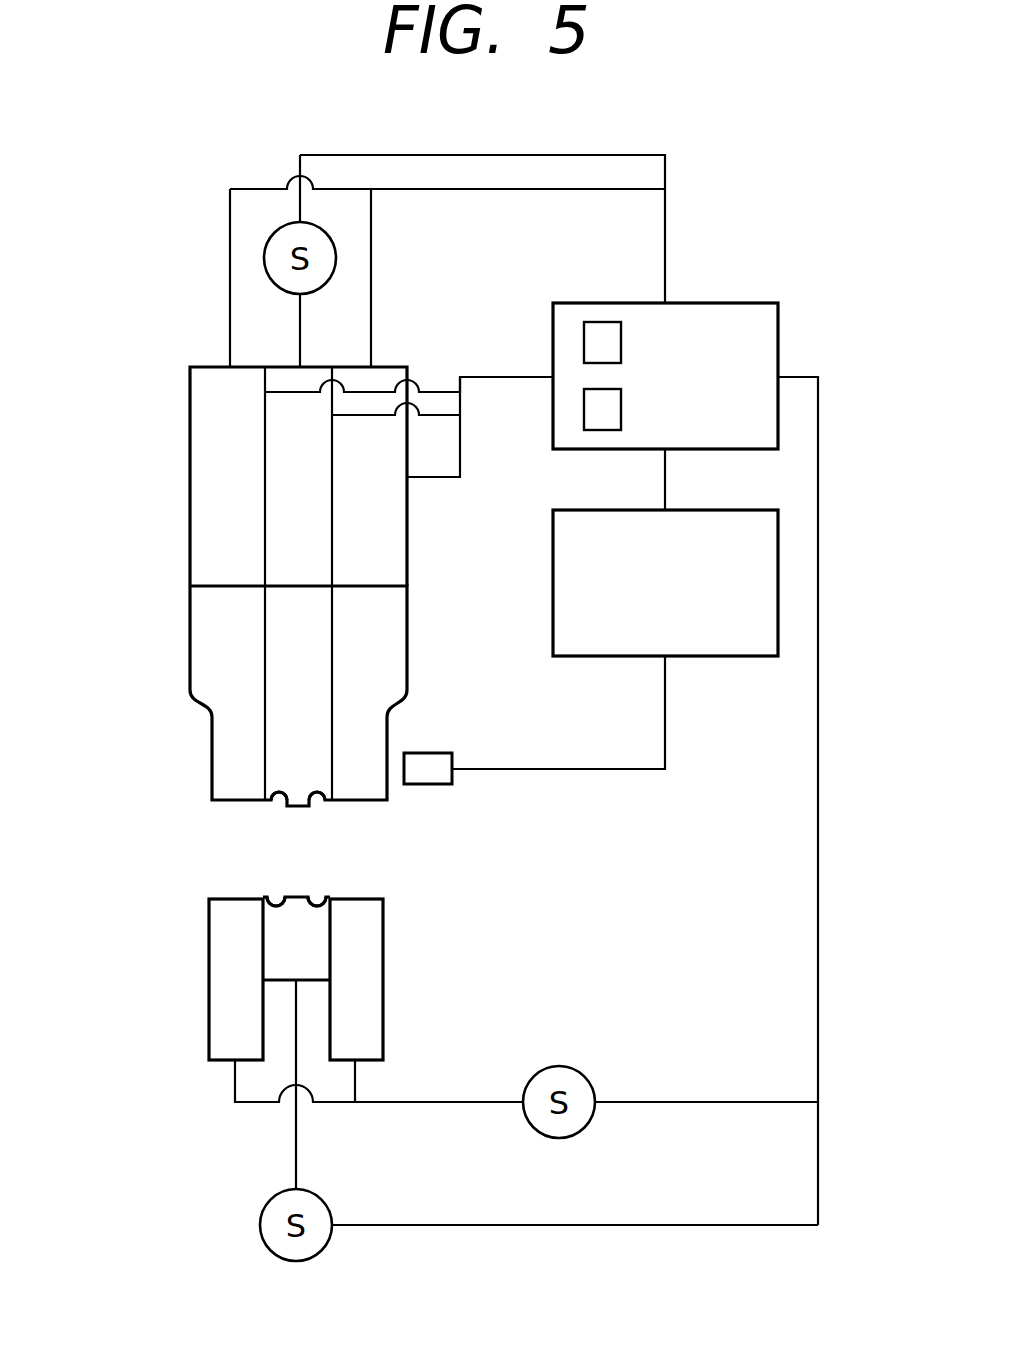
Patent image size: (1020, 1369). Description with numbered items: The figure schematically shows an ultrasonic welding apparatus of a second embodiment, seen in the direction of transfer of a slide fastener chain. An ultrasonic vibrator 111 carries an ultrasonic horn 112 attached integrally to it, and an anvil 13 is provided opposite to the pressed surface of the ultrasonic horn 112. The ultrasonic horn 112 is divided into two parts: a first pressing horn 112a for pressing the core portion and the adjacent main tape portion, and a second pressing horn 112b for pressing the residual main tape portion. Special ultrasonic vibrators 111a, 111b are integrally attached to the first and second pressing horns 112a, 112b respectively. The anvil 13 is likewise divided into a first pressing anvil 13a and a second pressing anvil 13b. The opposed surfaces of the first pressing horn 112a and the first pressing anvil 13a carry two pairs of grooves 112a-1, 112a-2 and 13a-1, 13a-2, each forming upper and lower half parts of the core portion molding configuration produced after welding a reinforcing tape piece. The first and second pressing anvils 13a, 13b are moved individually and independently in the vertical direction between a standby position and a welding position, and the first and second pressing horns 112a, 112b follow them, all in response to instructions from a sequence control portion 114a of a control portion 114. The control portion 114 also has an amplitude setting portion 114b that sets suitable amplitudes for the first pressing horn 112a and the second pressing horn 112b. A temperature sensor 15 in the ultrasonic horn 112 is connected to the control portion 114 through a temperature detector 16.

The ultrasonic vibrator 111 is at (253, 476).
The ultrasonic vibrator 111a is at (298, 538).
The ultrasonic vibrator 111b is at (205, 392).
The ultrasonic horn 112 is at (276, 713).
The first pressing horn 112a is at (298, 738).
The second pressing horn 112b is at (203, 661).
The groove 112a-1 is at (275, 803).
The groove 112a-2 is at (318, 803).
The anvil 13 is at (296, 1006).
The first pressing anvil 13a is at (283, 941).
The second pressing anvil 13b is at (367, 939).
The groove 13a-1 is at (276, 900).
The groove 13a-2 is at (318, 900).
The control portion 114 is at (623, 376).
The sequence control portion 114a is at (584, 340).
The amplitude setting portion 114b is at (584, 410).
The temperature sensor 15 is at (428, 753).
The temperature detector 16 is at (682, 602).